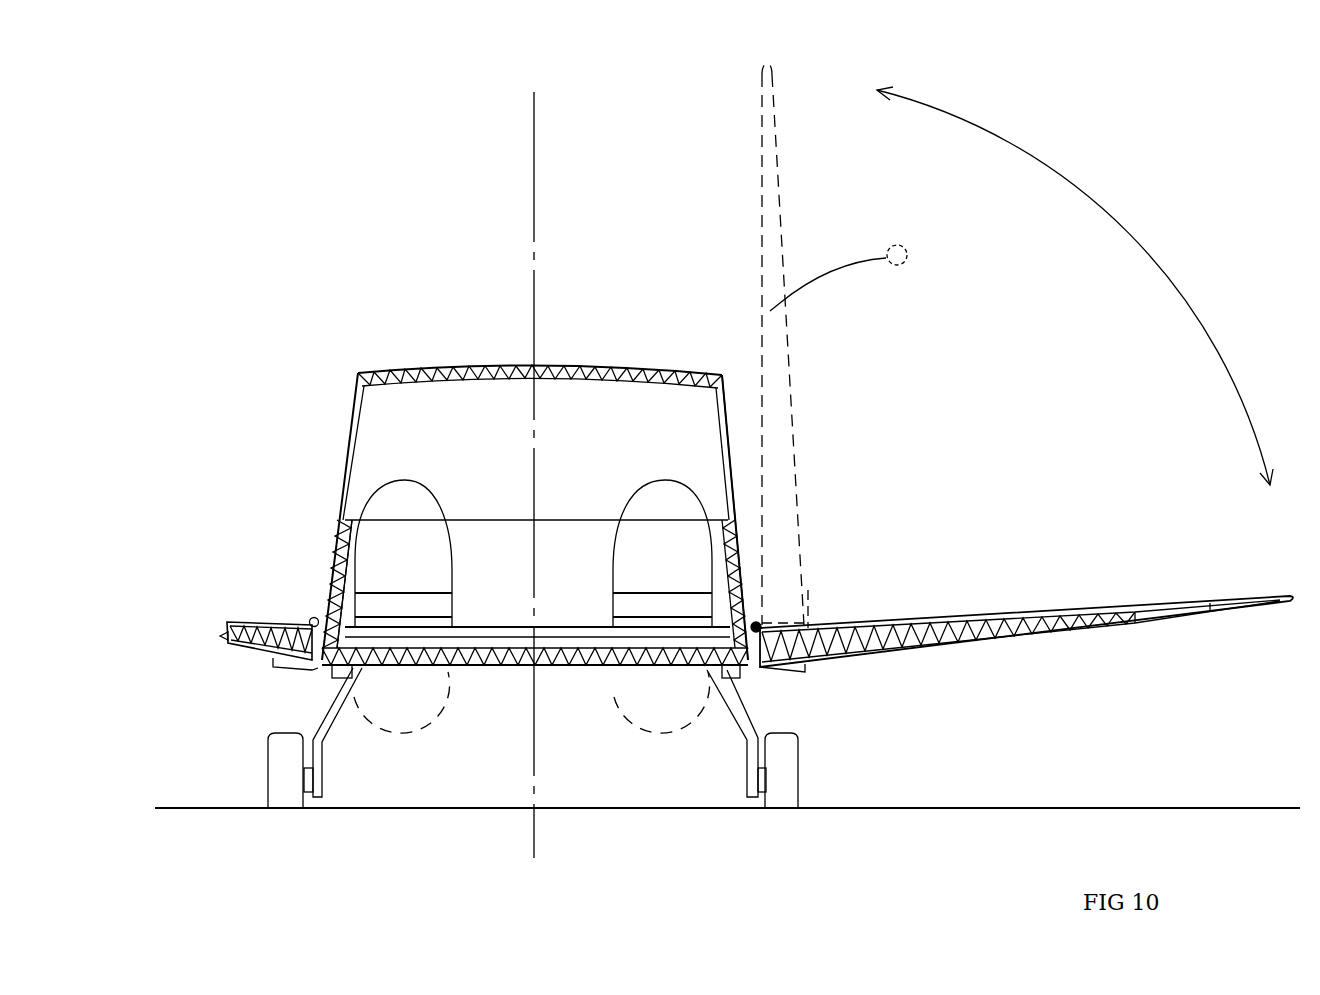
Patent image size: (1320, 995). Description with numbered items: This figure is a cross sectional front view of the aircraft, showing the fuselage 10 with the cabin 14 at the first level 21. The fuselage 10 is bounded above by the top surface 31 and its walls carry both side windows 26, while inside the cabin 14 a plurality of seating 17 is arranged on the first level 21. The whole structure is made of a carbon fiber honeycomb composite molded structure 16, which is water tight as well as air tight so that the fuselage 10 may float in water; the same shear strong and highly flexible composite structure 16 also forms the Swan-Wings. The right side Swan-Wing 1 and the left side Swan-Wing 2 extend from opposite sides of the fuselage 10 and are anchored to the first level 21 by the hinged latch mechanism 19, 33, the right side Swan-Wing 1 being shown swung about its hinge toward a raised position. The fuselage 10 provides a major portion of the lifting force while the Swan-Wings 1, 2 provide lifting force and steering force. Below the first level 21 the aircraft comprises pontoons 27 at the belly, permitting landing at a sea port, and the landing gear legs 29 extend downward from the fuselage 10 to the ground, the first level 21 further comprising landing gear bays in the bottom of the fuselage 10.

The right side Swan-Wing 1 is at (1090, 610).
The left side Swan-Wing 2 is at (258, 628).
The fuselage 10 is at (743, 563).
The cabin 14 is at (572, 556).
The carbon fiber honeycomb composite molded structure 16 is at (415, 372).
The seating 17 is at (385, 557).
The hinged latch mechanism 19 is at (310, 622).
The first level 21 is at (553, 645).
The side windows 26 is at (347, 452).
The pontoon 27 is at (415, 725).
The landing gear legs 29 is at (322, 750).
The top surface 31 is at (465, 372).
The hinged latch mechanism 33 is at (320, 672).